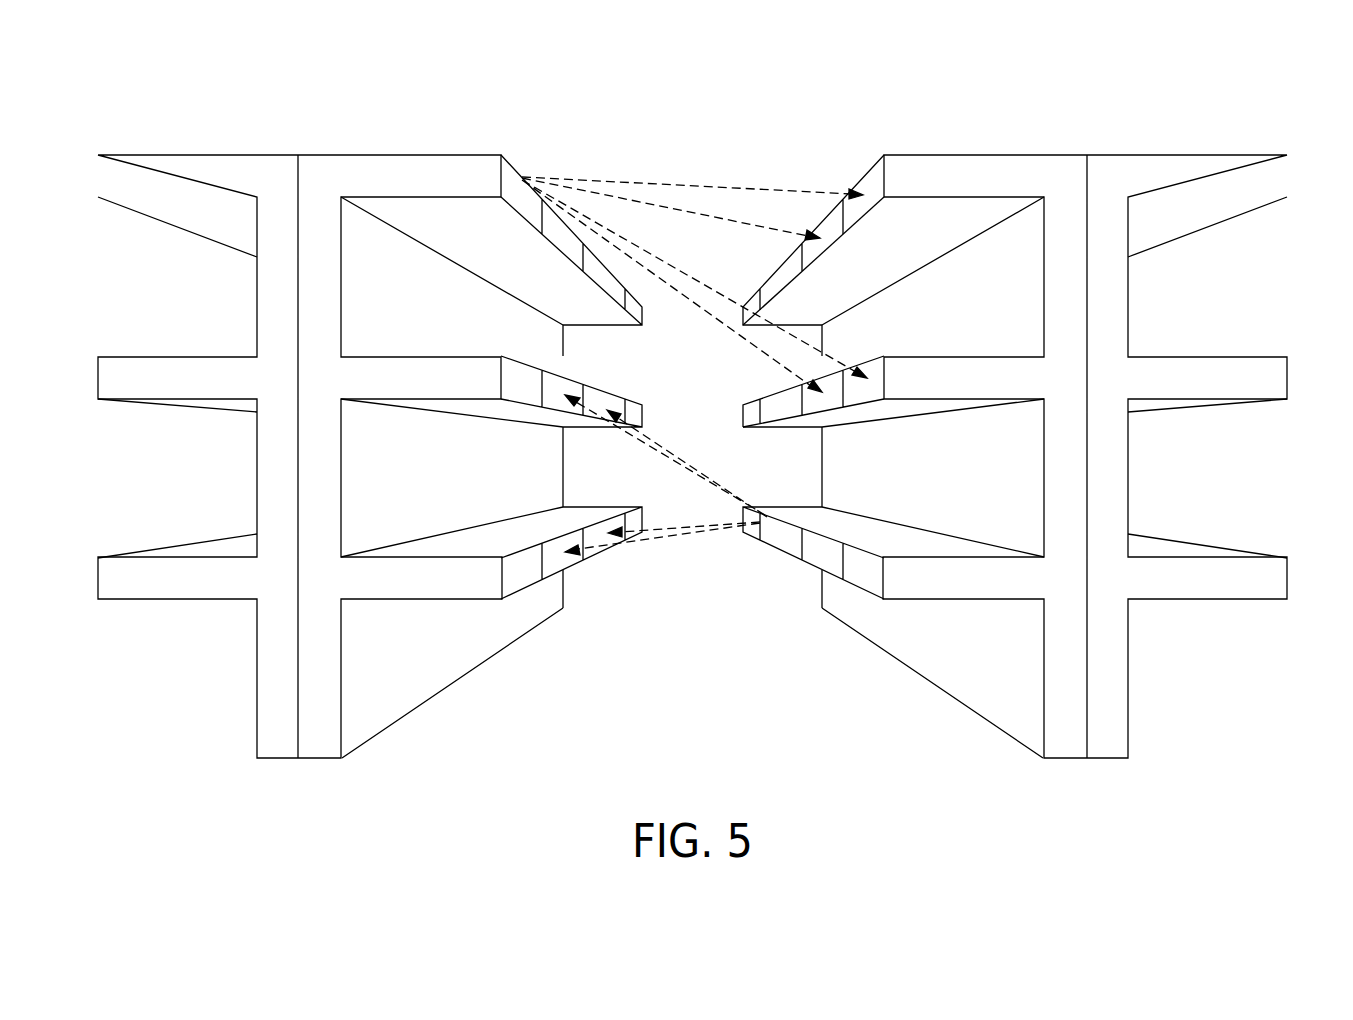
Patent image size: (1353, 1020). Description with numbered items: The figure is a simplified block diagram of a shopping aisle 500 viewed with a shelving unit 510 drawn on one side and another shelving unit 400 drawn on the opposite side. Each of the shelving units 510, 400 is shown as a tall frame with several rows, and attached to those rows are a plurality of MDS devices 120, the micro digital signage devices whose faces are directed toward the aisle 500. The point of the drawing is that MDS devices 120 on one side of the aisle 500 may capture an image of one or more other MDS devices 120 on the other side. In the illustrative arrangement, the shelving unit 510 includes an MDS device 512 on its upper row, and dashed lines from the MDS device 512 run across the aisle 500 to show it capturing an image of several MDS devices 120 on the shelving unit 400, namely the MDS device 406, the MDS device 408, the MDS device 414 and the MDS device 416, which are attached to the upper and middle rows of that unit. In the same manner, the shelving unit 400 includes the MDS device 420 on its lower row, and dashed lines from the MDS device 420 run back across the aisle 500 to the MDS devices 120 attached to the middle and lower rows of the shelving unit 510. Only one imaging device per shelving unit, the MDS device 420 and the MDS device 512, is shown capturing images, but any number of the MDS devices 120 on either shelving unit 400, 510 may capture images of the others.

The shopping aisle 500 is at (672, 85).
The shelving unit 510 is at (377, 133).
The shelving unit 400 is at (1010, 135).
The MDS device 512 is at (517, 157).
The MDS device 408 is at (878, 158).
The MDS device 406 is at (826, 250).
The MDS device 416 is at (883, 356).
The MDS device 414 is at (823, 428).
The MDS device 420 is at (770, 547).
The MDS devices 120 is at (493, 228).